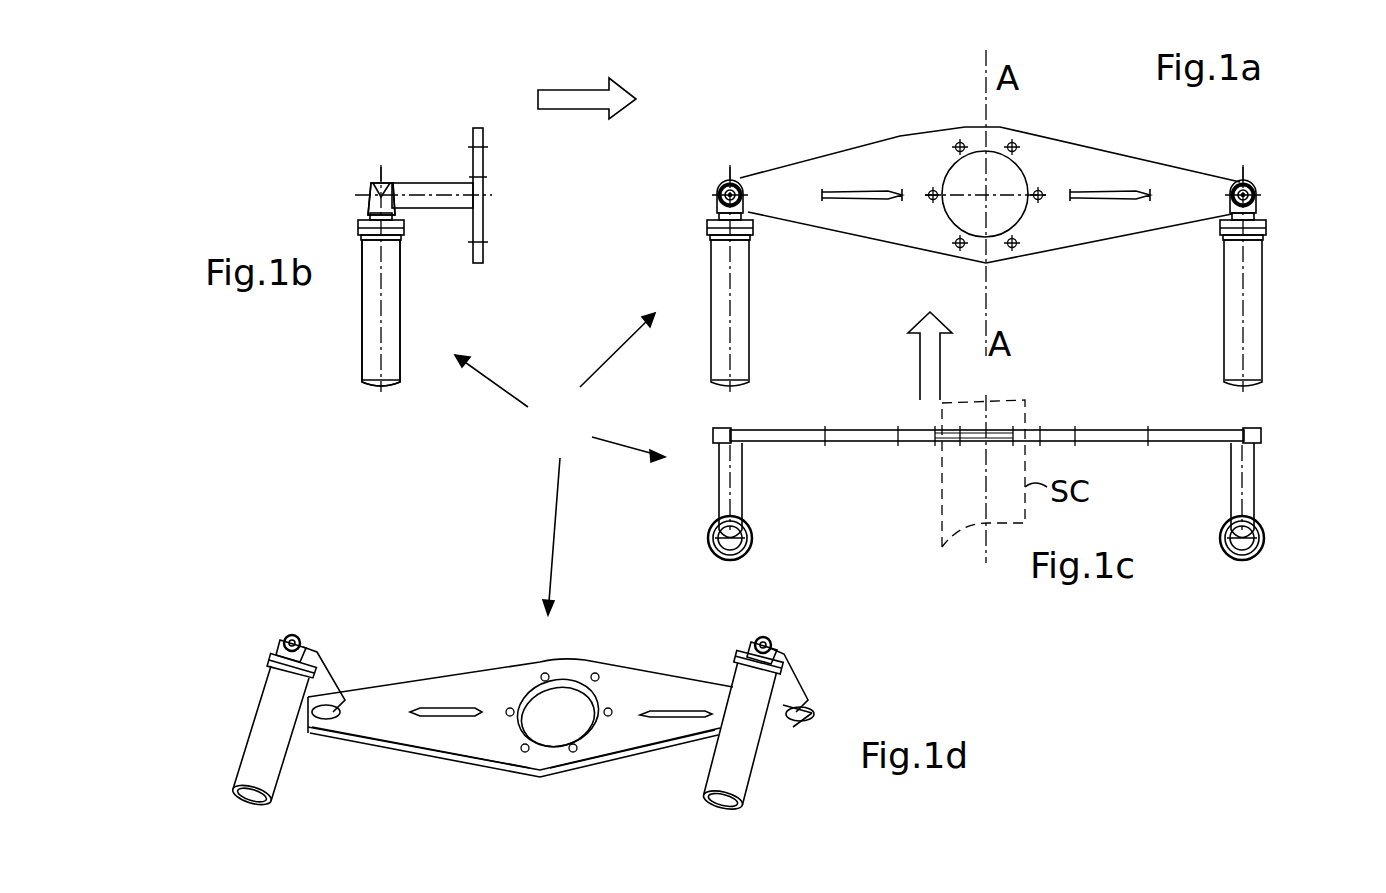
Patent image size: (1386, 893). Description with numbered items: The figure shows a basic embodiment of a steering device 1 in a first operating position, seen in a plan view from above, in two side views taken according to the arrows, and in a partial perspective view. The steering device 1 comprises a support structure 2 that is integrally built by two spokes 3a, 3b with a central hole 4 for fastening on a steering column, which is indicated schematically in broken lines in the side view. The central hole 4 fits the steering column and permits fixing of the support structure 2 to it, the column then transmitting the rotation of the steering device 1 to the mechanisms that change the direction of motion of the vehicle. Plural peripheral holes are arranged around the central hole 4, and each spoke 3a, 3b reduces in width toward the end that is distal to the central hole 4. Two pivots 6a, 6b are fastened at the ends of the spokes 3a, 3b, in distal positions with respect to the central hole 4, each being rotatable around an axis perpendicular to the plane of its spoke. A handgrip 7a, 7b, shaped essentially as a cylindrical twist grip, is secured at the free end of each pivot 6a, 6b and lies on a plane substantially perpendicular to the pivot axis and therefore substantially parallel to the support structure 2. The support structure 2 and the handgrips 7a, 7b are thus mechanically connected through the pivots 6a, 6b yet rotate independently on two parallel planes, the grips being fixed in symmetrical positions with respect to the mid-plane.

In FIG. 1D, the steering device 1 is at (560, 464).
In FIG. 1B, the support structure 2 is at (473, 232).
In FIG. 1D, the support structure 2 is at (422, 680).
In FIG. 1A, the spoke 3a is at (905, 250).
In FIG. 1D, the spoke 3a is at (388, 710).
In FIG. 1A, the spoke 3b is at (1120, 238).
In FIG. 1D, the spoke 3b is at (665, 720).
In FIG. 1A, the central hole 4 is at (975, 162).
In FIG. 1D, the central hole 4 is at (558, 712).
In FIG. 1A, the pivot 6a is at (742, 178).
In FIG. 1B, the pivot 6a is at (420, 182).
In FIG. 1D, the pivot 6a is at (338, 715).
In FIG. 1A, the pivot 6b is at (1250, 188).
In FIG. 1B, the pivot 6b is at (381, 199).
In FIG. 1D, the pivot 6b is at (790, 700).
In FIG. 1A, the handgrip 7a is at (731, 278).
In FIG. 1B, the handgrip 7a is at (378, 325).
In FIG. 1D, the handgrip 7a is at (252, 745).
In FIG. 1A, the handgrip 7b is at (1228, 312).
In FIG. 1B, the handgrip 7b is at (381, 313).
In FIG. 1D, the handgrip 7b is at (748, 718).